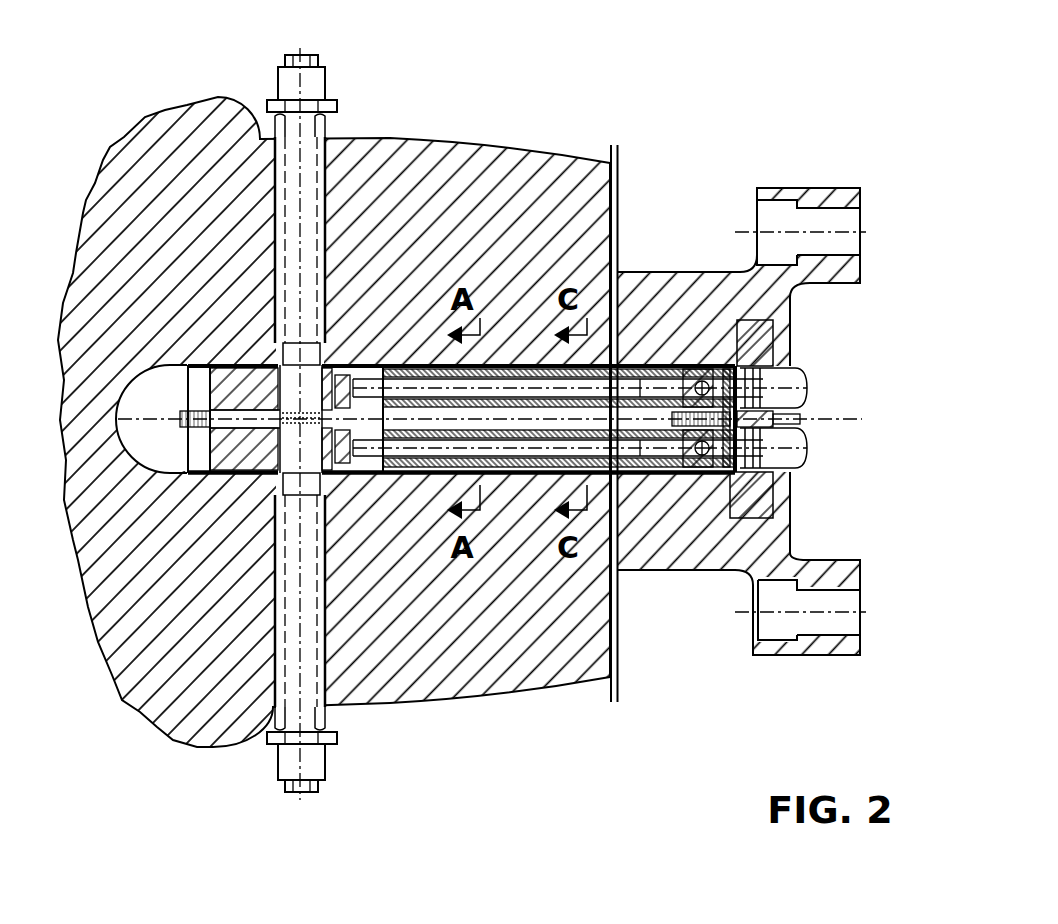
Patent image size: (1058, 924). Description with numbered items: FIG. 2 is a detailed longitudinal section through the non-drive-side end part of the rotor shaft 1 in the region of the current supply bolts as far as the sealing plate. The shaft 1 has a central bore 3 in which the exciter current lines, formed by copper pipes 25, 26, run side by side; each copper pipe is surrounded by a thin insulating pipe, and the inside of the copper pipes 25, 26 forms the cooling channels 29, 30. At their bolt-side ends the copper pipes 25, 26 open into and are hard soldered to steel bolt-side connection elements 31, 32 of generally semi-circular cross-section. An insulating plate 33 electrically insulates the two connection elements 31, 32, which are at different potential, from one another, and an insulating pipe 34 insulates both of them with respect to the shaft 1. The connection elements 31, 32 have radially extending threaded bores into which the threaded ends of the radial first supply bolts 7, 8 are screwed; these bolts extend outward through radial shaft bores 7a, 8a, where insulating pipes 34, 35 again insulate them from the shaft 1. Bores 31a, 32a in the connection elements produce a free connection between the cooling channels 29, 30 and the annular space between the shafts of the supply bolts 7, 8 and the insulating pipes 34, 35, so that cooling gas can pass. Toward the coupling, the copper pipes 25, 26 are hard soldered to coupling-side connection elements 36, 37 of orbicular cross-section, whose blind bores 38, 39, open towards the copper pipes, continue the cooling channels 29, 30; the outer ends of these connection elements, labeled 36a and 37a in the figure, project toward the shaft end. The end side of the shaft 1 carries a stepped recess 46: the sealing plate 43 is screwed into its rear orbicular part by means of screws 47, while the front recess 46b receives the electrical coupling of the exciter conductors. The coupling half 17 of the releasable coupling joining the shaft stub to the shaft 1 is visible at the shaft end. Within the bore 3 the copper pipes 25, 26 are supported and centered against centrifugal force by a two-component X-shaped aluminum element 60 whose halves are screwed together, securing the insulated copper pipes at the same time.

The shaft 1 is at (495, 642).
The central bore 3 is at (152, 392).
The first supply bolt 7 is at (314, 768).
The radial shaft bore 7a is at (278, 662).
The first supply bolt 8 is at (314, 409).
The radial shaft bore 8a is at (278, 180).
The coupling half 17 is at (822, 200).
The copper pipe 25 is at (597, 560).
The copper pipe 26 is at (600, 330).
The cooling channel 29 is at (537, 453).
The cooling channel 30 is at (532, 385).
The bolt-side connection element 31 is at (247, 440).
The bore 31a is at (348, 460).
The bolt-side connection element 32 is at (228, 382).
The bore 32a is at (350, 380).
The insulating plate 33 is at (228, 457).
The insulating pipe 34 is at (200, 474).
The insulating pipe 35 is at (461, 245).
The coupling-side connection element 36 is at (700, 470).
The lower rod head 36a is at (787, 451).
The coupling-side connection element 37 is at (674, 382).
The upper rod head 37a is at (787, 391).
The blind bore 38 is at (678, 480).
The blind bore 39 is at (685, 385).
The sealing plate 43 is at (763, 347).
The stepped recess 46 is at (760, 520).
The front recess 46b is at (843, 450).
The screw 47 is at (780, 332).
The X-shaped aluminum element 60 is at (638, 572).